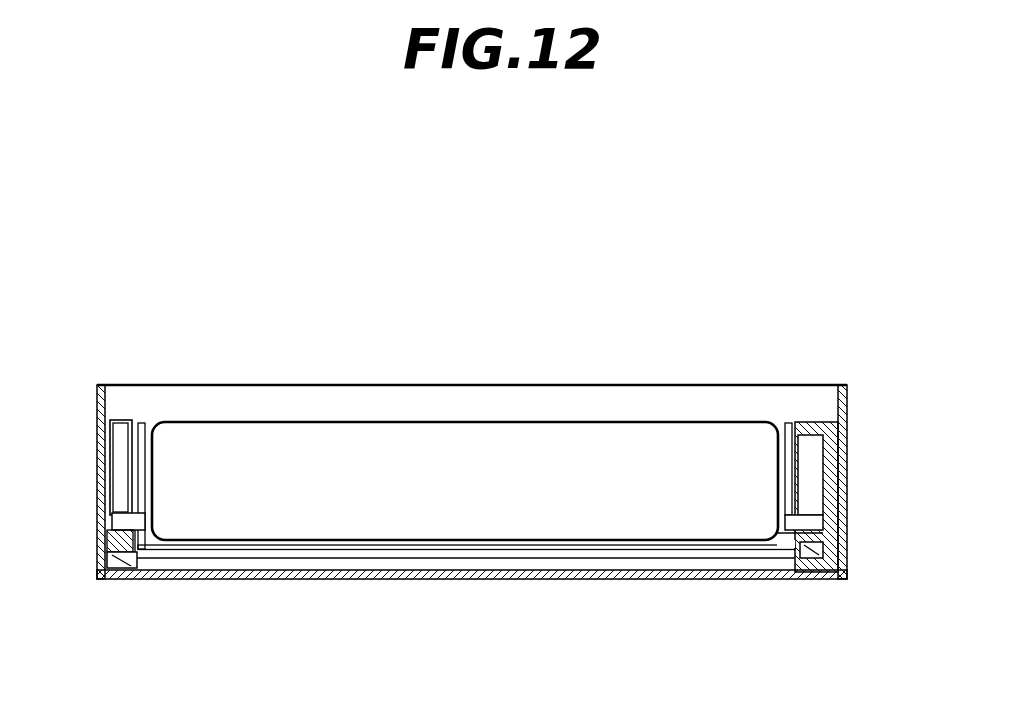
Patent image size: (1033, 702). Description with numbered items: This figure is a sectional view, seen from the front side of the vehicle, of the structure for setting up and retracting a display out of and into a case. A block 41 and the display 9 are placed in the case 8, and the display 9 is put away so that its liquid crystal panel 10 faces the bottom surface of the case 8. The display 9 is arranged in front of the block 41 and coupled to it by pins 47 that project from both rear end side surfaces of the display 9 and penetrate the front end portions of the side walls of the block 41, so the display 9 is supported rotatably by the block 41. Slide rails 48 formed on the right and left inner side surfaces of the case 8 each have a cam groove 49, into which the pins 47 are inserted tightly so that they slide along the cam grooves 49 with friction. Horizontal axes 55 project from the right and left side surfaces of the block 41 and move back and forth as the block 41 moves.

The case 8 is at (856, 446).
The display 9 is at (573, 527).
The liquid crystal panel 10 is at (472, 549).
The block 41 is at (708, 552).
The pin 47 is at (120, 522).
The slide rail 48 is at (120, 422).
The cam groove 49 is at (812, 492).
The horizontal axis 55 is at (115, 556).